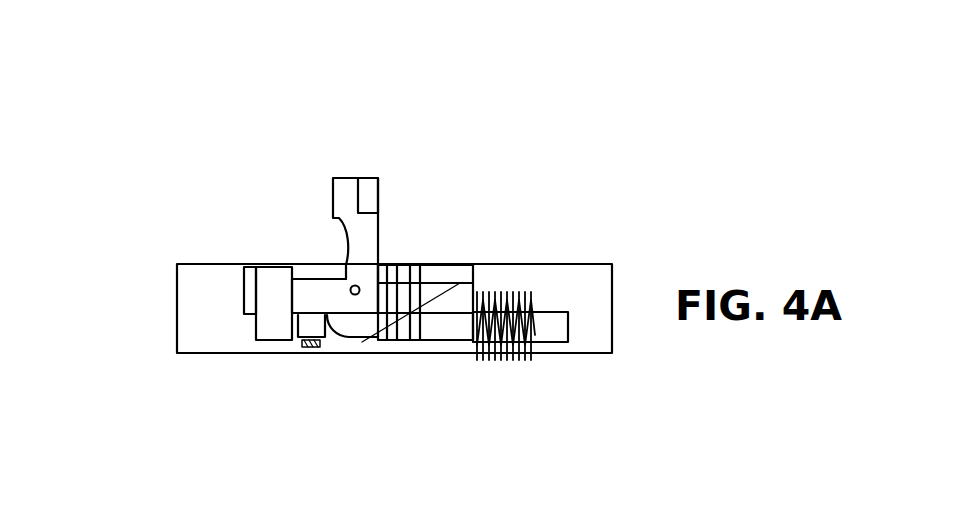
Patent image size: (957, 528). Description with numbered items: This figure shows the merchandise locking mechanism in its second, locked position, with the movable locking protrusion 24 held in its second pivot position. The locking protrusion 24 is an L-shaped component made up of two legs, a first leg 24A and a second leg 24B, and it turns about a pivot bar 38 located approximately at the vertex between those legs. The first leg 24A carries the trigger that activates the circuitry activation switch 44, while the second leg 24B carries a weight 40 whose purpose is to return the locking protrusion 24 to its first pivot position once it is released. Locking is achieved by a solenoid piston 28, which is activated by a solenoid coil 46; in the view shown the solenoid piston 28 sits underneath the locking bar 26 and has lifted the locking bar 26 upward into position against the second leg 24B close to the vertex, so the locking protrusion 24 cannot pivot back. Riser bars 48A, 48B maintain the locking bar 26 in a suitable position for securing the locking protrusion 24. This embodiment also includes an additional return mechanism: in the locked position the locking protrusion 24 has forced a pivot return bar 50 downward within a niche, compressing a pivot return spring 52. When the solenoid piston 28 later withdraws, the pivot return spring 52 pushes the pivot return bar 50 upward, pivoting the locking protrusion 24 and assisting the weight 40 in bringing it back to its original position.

The locking protrusion 24 is at (318, 191).
The first leg 24A is at (340, 423).
The second leg 24B is at (378, 248).
The locking bar 26 is at (447, 280).
The solenoid piston 28 is at (432, 315).
The pivot bar 38 is at (352, 285).
The weight 40 is at (378, 180).
The circuitry activation switch 44 is at (308, 282).
The solenoid coil 46 is at (503, 350).
The riser bar 48A is at (359, 296).
The riser bar 48B is at (413, 333).
The pivot return bar 50 is at (305, 305).
The pivot return spring 52 is at (320, 292).